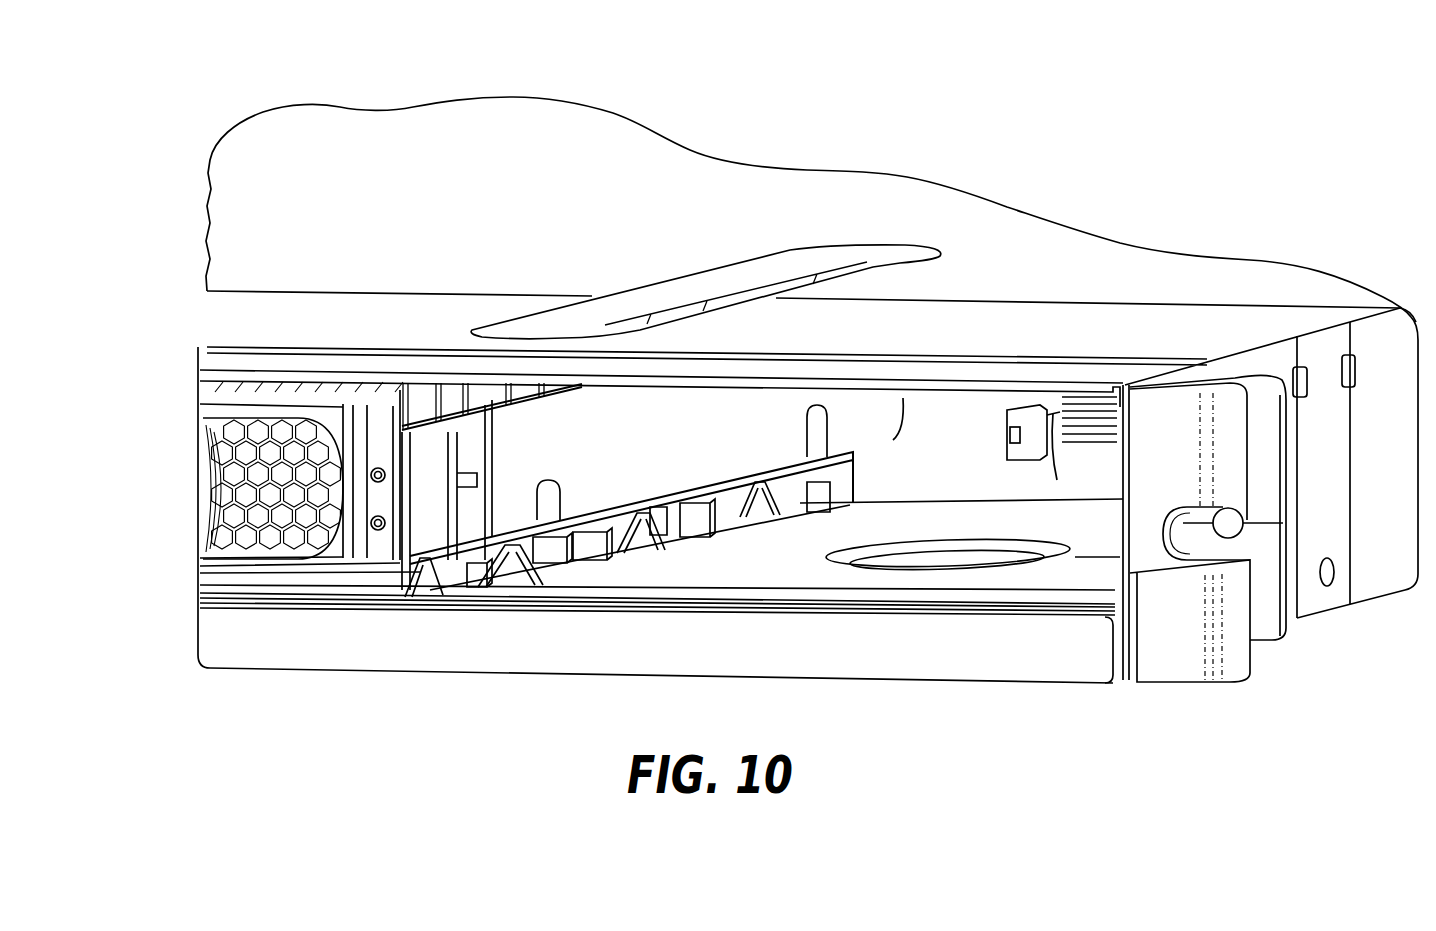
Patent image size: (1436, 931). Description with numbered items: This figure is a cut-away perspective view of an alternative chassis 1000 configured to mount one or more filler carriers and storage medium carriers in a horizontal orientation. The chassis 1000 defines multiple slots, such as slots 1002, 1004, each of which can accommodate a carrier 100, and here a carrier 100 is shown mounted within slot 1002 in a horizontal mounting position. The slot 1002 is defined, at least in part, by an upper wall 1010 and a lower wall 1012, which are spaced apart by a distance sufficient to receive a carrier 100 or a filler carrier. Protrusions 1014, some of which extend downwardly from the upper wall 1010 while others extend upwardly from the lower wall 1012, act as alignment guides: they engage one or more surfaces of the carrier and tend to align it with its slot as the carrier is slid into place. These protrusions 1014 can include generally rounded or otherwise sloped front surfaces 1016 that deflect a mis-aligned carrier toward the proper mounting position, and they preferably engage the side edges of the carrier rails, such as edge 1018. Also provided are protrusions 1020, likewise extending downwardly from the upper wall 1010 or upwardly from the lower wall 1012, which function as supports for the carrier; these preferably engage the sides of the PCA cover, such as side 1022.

The carrier 100 is at (266, 638).
The chassis 1000 is at (688, 200).
The slot 1002 is at (252, 385).
The slot 1004 is at (926, 439).
The upper wall 1010 is at (605, 395).
The lower wall 1012 is at (937, 530).
The protrusions 1014 is at (527, 562).
The front surfaces 1016 is at (493, 556).
The edge 1018 is at (687, 490).
The protrusions 1020 is at (558, 476).
The side 1022 is at (582, 525).